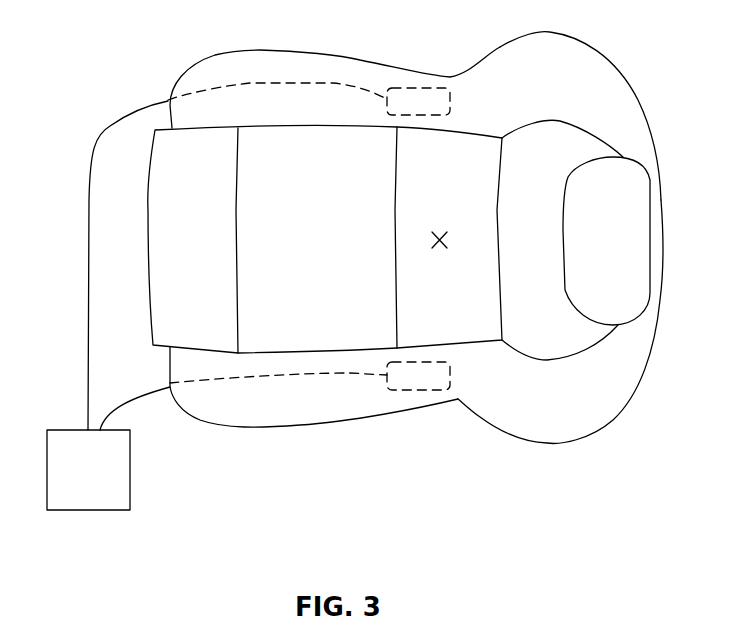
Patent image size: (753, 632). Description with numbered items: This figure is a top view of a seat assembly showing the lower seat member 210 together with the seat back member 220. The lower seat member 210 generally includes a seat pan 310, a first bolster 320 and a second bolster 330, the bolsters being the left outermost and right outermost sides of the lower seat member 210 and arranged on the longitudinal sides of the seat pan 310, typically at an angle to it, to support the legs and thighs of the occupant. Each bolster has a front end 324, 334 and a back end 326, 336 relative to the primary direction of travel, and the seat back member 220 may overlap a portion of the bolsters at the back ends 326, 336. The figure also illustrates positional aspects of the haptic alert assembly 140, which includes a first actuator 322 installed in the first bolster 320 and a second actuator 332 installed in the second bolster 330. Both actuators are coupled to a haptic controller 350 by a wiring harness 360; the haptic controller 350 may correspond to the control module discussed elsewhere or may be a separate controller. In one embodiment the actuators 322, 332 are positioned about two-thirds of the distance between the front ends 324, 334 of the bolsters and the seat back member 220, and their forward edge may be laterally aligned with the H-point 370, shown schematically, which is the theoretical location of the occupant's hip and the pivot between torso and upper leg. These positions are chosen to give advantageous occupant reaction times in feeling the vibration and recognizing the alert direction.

The haptic alert assembly 140 is at (150, 468).
The lower seat member 210 is at (350, 453).
The seat back member 220 is at (588, 435).
The seat pan 310 is at (157, 250).
The first bolster 320 is at (180, 373).
The first actuator 322 is at (413, 383).
The front end 324 is at (180, 403).
The back end 326 is at (617, 418).
The second bolster 330 is at (180, 112).
The second actuator 332 is at (423, 93).
The front end 334 is at (180, 68).
The back end 336 is at (613, 55).
The haptic controller 350 is at (90, 510).
The wiring harness 360 is at (247, 385).
The H-point 370 is at (440, 250).